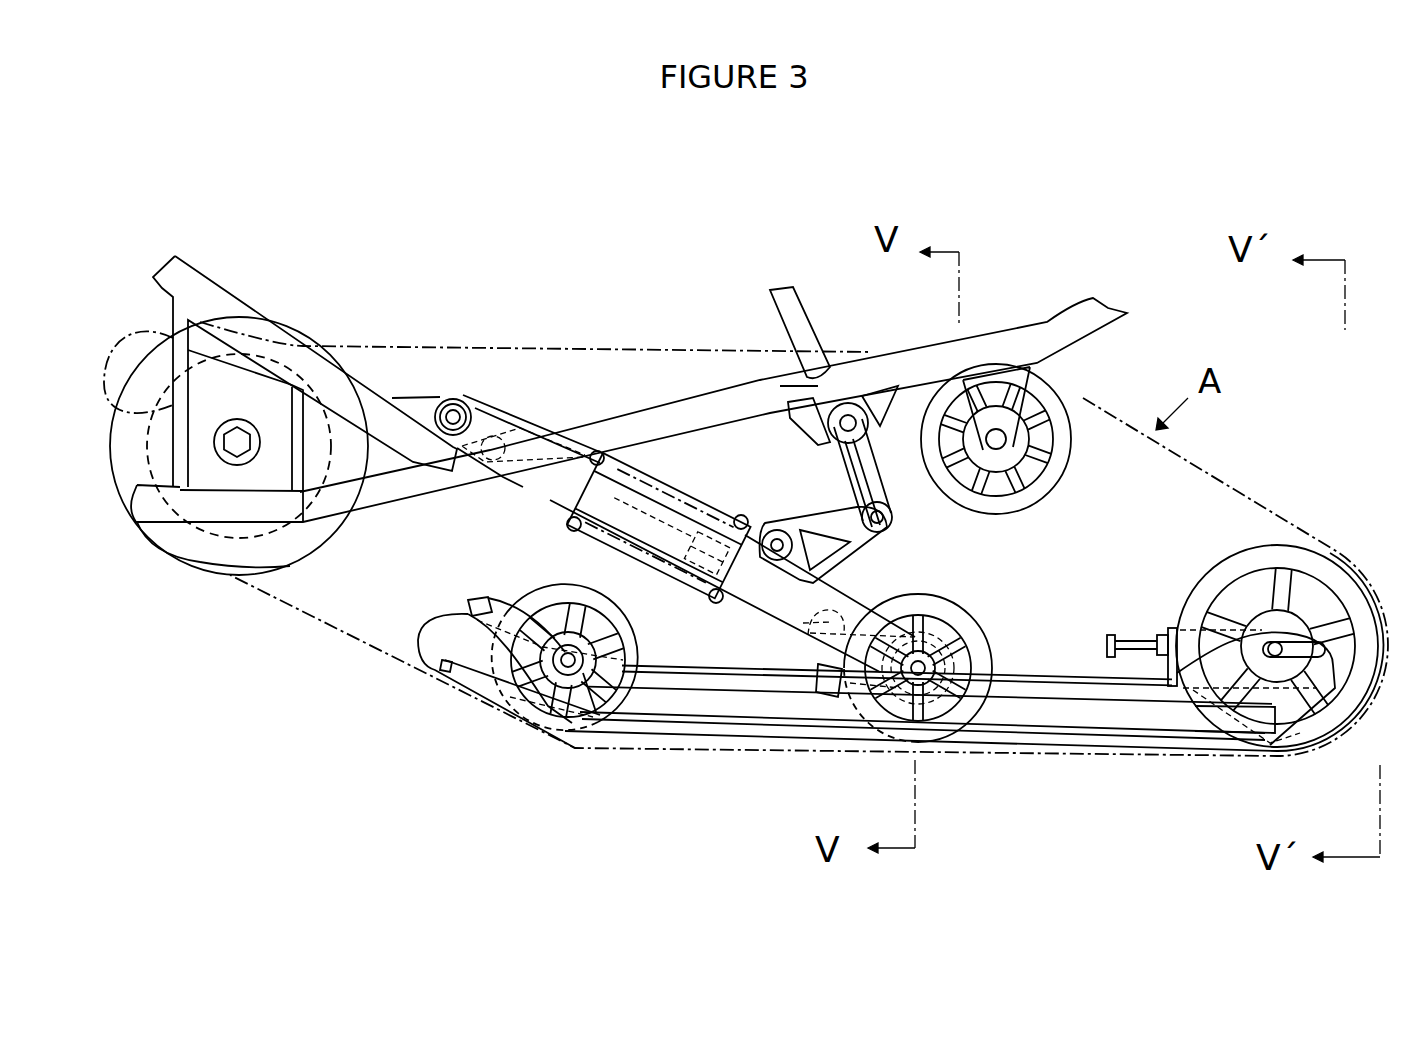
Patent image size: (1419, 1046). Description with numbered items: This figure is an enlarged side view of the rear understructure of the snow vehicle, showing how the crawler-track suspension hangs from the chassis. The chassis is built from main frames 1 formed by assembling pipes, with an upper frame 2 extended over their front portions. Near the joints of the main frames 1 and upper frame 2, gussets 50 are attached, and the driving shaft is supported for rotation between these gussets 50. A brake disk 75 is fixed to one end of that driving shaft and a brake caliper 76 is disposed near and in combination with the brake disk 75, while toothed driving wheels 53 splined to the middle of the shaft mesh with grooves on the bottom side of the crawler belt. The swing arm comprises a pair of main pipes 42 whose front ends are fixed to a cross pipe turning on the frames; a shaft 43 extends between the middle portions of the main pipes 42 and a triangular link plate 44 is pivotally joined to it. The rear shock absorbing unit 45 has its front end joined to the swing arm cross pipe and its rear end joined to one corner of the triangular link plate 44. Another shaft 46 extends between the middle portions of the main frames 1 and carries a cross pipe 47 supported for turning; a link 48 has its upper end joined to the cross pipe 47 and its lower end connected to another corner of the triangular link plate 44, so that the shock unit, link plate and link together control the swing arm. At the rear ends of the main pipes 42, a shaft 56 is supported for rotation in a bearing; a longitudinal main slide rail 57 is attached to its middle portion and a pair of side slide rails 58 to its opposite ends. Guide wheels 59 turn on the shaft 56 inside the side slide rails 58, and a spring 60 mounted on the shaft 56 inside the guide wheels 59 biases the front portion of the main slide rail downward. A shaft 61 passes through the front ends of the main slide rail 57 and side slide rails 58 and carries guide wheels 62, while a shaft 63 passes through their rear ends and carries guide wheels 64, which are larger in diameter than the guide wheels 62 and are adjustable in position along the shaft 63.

The main frames 1 is at (160, 513).
The upper frame 2 is at (187, 277).
The gussets 50 is at (200, 340).
The brake disk 75 is at (303, 328).
The brake caliper 76 is at (153, 332).
The toothed driving wheels 53 is at (250, 546).
The rear shock absorbing unit 45 is at (653, 503).
The shaft 46 is at (848, 415).
The cross pipe 47 is at (867, 385).
The shaft 43 is at (769, 530).
The triangular link plate 44 is at (821, 517).
The link 48 is at (887, 472).
The spring 60 is at (880, 632).
The main slide rail 57 is at (447, 662).
The guide wheels 62 is at (497, 700).
The shaft 61 is at (567, 672).
The main pipes 42 is at (760, 603).
The shaft 56 is at (917, 675).
The guide wheels 59 is at (930, 737).
The side slide rails 58 is at (1112, 690).
The shaft 63 is at (1271, 658).
The guide wheels 64 is at (1298, 745).